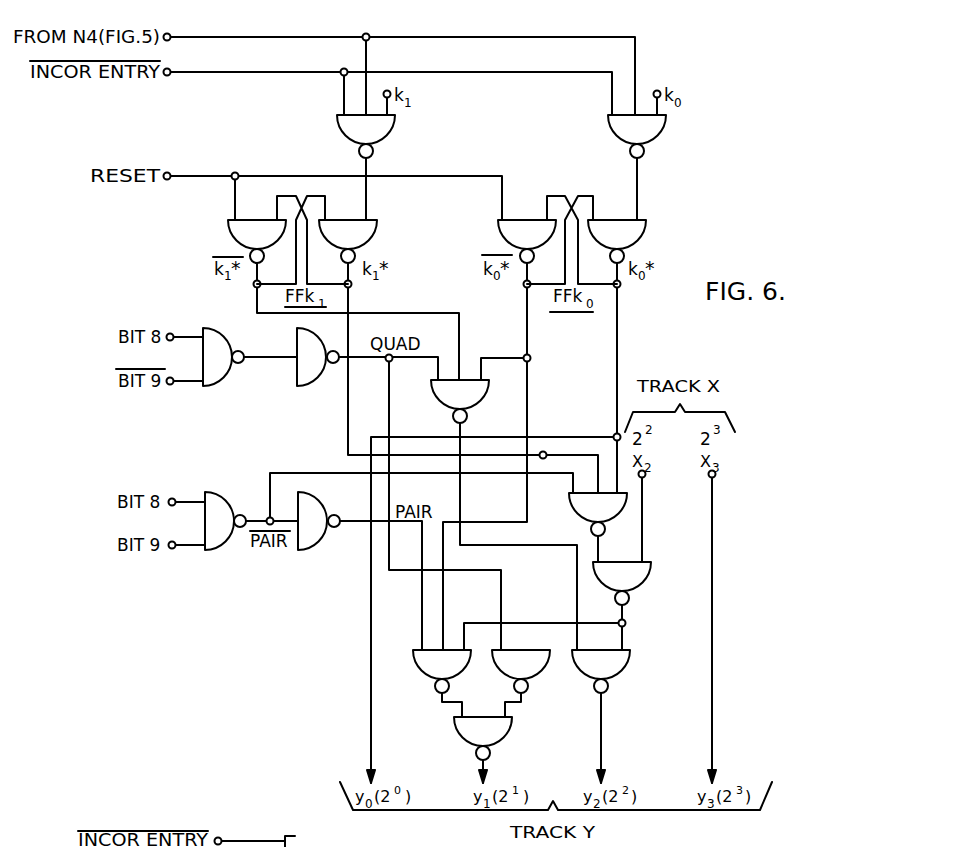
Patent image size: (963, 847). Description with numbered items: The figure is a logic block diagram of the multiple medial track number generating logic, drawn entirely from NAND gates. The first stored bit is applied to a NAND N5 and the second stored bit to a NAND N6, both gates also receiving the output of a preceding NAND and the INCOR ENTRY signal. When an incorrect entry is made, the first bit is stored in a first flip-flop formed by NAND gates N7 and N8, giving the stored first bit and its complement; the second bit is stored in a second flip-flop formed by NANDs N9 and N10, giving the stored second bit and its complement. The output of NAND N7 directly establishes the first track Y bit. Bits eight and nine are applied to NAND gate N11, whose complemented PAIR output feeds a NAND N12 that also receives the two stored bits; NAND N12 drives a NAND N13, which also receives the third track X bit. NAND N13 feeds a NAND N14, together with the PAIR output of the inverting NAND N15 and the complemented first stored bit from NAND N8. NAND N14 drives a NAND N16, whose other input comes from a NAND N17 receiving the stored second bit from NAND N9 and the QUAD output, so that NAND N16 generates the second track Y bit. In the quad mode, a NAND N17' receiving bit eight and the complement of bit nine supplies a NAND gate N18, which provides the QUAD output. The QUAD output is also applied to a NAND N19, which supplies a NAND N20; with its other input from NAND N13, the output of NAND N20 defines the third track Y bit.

The NAND gate N5 is at (610, 137).
The NAND gate N6 is at (392, 137).
The NAND gate N7 is at (645, 236).
The NAND gate N8 is at (499, 236).
The NAND gate N9 is at (376, 236).
The NAND gate N10 is at (229, 236).
The NAND gate N11 is at (234, 488).
The NAND gate N12 is at (588, 510).
The NAND gate N13 is at (636, 582).
The NAND gate N14 is at (426, 670).
The inverting NAND gate N15 is at (320, 504).
The NAND gate N16 is at (503, 740).
The NAND gate N17 is at (535, 683).
The NAND gate N17' is at (250, 368).
The NAND gate N18 is at (302, 383).
The NAND gate N19 is at (445, 402).
The NAND gate N20 is at (612, 674).